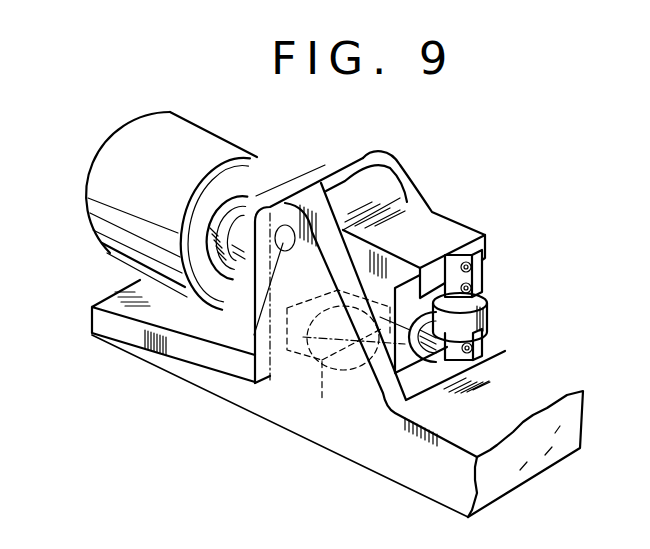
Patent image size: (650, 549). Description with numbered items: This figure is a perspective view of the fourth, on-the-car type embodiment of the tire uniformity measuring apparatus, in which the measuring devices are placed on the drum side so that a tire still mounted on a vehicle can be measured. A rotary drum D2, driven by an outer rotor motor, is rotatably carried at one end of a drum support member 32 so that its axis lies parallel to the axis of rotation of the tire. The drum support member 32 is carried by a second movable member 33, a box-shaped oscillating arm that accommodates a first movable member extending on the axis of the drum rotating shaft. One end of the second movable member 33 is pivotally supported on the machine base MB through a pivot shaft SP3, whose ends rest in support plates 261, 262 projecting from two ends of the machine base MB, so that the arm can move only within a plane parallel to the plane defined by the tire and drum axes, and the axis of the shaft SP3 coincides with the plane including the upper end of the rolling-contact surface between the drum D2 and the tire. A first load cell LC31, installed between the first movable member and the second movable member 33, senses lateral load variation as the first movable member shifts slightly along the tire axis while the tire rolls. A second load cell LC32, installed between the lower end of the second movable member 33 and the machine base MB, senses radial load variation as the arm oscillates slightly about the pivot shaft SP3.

The rotary drum D2 is at (118, 145).
The drum support member 32 is at (247, 197).
The support plate 261 is at (313, 224).
The support plate 262 is at (402, 170).
The second movable member 33 is at (445, 226).
The first load cell LC31 is at (474, 320).
The second load cell LC32 is at (317, 352).
The pivot shaft SP3 is at (205, 377).
The machine base MB is at (326, 435).